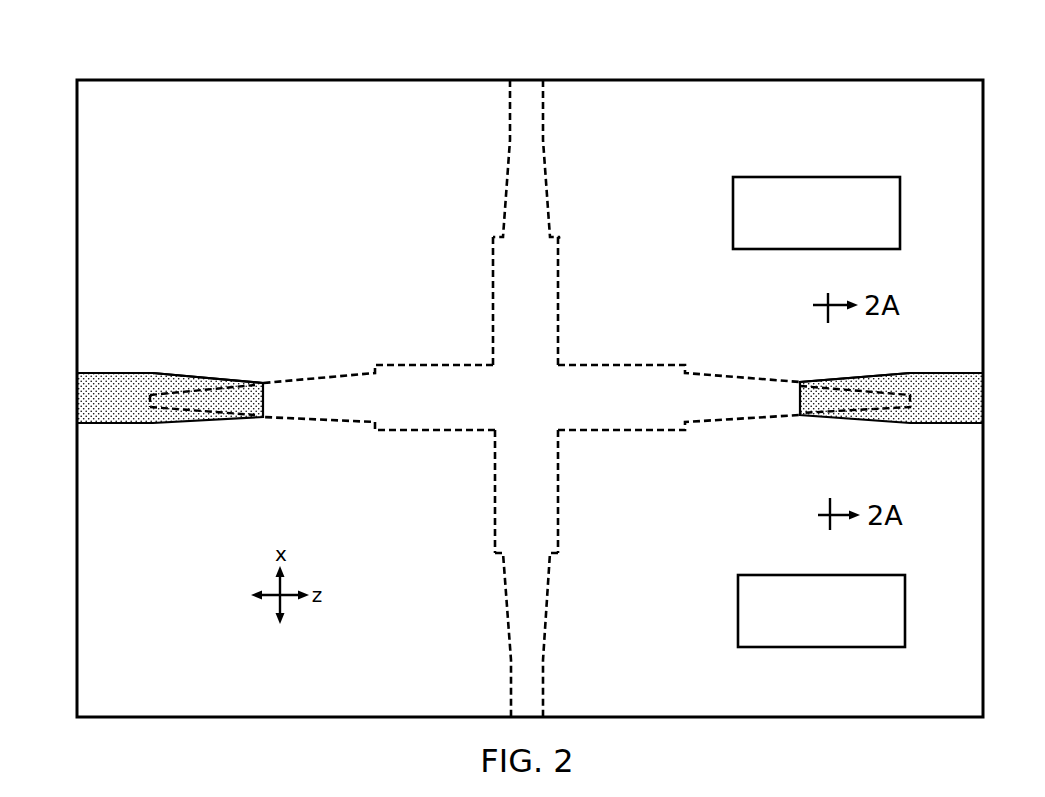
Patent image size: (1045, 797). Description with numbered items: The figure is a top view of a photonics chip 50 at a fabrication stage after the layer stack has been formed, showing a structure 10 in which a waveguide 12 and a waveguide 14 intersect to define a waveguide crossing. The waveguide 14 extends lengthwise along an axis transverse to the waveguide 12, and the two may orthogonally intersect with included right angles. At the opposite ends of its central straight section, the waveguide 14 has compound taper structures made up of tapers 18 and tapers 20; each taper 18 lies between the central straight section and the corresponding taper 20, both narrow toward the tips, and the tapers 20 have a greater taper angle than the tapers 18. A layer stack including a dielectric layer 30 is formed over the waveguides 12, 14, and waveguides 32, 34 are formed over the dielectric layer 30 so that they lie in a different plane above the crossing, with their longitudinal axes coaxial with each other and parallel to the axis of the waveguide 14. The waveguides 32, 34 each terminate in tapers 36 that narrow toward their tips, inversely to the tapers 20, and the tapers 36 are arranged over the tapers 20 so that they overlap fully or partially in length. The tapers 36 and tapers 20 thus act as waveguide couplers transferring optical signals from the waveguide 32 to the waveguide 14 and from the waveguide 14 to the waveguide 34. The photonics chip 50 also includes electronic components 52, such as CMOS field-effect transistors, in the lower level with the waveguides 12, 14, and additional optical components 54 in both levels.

The structure 10 is at (326, 280).
The waveguide 12 is at (493, 283).
The waveguide 14 is at (442, 405).
The tapers 18 is at (500, 171).
The tapers 20 is at (220, 416).
The dielectric layer 30 is at (123, 600).
The waveguide 32 is at (116, 397).
The waveguide 34 is at (945, 405).
The tapers 36 is at (216, 370).
The photonics chip 50 is at (148, 68).
The electronic components 52 is at (738, 604).
The optical components 54 is at (733, 217).